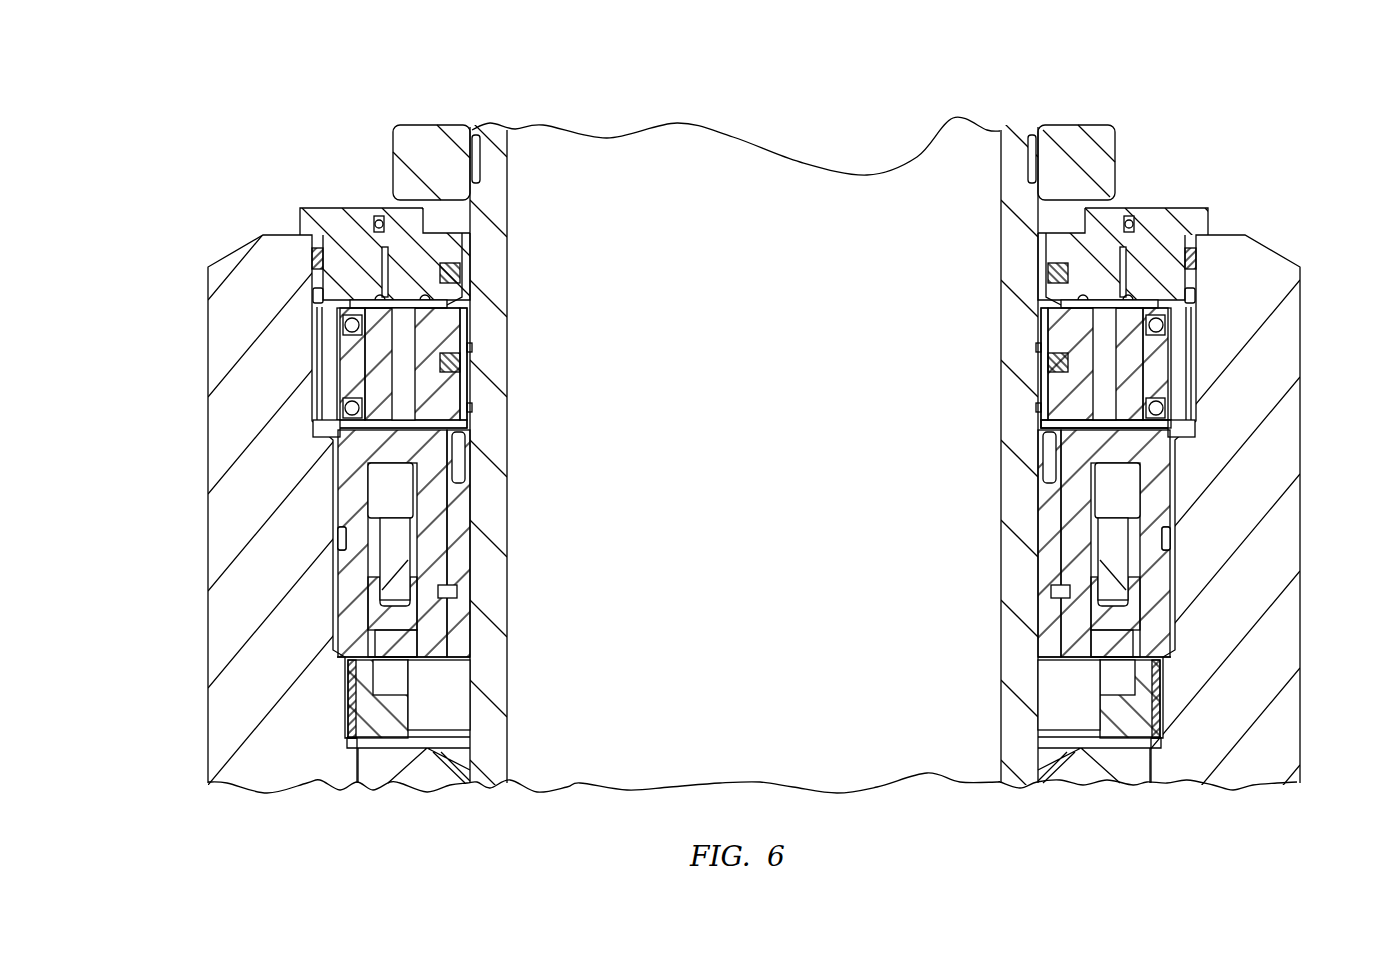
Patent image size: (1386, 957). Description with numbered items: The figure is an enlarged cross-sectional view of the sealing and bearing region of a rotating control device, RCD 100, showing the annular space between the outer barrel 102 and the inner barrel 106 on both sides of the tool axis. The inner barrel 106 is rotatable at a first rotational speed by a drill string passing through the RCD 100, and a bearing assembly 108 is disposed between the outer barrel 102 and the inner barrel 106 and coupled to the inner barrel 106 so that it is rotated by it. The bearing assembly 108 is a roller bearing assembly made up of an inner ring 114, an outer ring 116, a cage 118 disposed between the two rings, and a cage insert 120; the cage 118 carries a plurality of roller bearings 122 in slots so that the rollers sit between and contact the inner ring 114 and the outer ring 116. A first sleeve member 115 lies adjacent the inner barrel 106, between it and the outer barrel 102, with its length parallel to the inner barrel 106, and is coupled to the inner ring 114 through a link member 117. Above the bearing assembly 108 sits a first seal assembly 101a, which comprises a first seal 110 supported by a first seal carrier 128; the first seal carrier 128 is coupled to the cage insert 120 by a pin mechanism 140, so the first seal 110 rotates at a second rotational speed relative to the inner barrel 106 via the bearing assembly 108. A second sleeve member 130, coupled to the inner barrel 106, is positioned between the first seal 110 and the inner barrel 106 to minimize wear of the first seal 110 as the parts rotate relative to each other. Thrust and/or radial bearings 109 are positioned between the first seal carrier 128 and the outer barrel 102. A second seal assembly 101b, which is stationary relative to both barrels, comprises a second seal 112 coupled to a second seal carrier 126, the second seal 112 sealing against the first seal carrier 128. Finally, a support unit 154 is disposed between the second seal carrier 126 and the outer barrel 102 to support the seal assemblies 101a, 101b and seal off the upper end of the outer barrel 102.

The RCD 100 is at (1252, 112).
The first seal assembly 101a is at (447, 396).
The second seal assembly 101b is at (449, 241).
The outer barrel 102 is at (207, 333).
The inner barrel 106 is at (508, 690).
The bearing assembly 108 is at (343, 543).
The thrust and/or radial bearings 109 is at (343, 403).
The first seal 110 is at (457, 362).
The second seal 112 is at (456, 270).
The inner ring 114 is at (437, 523).
The first sleeve member 115 is at (462, 630).
The outer ring 116 is at (347, 467).
The link member 117 is at (452, 595).
The cage 118 is at (400, 553).
The cage insert 120 is at (460, 437).
The roller bearings 122 is at (393, 612).
The second seal carrier 126 is at (388, 212).
The first seal carrier 128 is at (437, 320).
The second sleeve member 130 is at (463, 388).
The pin mechanism 140 is at (1092, 395).
The support unit 154 is at (320, 217).